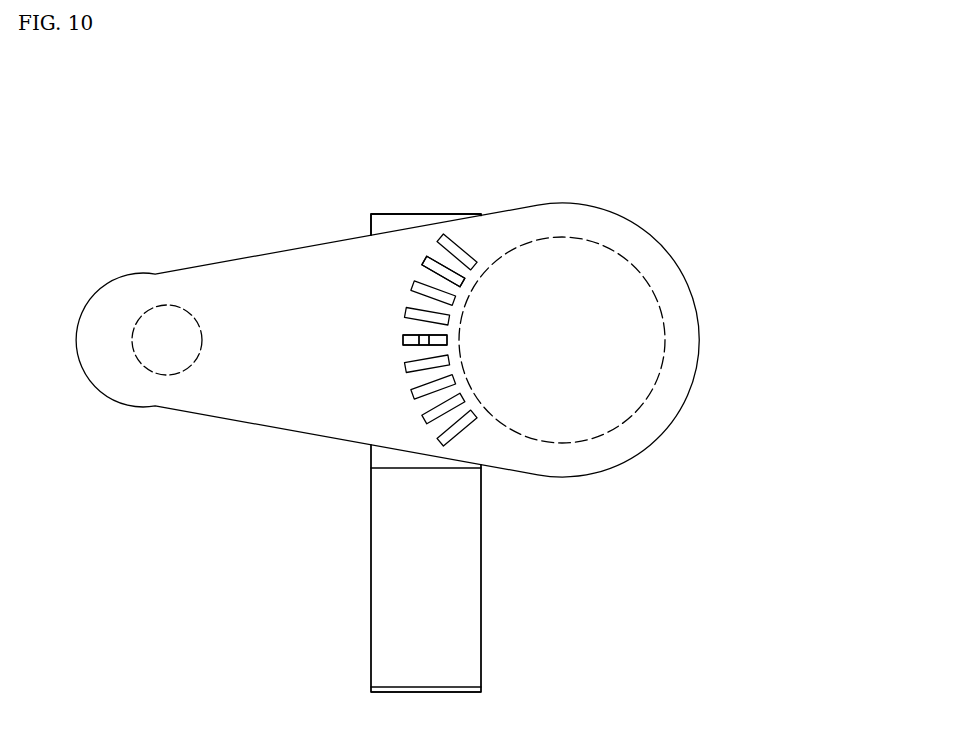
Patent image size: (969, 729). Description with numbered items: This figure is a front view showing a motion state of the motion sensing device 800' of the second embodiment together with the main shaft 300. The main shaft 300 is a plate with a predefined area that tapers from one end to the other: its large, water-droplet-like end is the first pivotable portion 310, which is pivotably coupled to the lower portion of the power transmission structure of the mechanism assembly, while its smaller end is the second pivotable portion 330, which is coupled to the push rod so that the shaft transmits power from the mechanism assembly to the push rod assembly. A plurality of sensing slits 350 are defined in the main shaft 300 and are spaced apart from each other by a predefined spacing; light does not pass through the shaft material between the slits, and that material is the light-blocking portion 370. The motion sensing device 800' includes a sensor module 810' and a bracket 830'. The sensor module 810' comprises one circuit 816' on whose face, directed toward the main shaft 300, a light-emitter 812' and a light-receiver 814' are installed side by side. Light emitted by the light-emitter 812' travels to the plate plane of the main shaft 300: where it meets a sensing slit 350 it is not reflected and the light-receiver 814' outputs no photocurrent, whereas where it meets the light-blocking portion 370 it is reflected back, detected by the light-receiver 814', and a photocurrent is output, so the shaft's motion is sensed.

The main shaft 300 is at (455, 97).
The second pivotable portion 330 is at (161, 305).
The light-blocking portion 370 is at (407, 326).
The sensing slit 350 is at (425, 258).
The first pivotable portion 310 is at (533, 240).
The light-emitter 812' is at (599, 306).
The light-receiver 814' is at (607, 337).
The circuit 816' is at (583, 361).
The sensor module 810' is at (618, 352).
The motion sensing device 800' is at (653, 453).
The bracket 830' is at (618, 568).